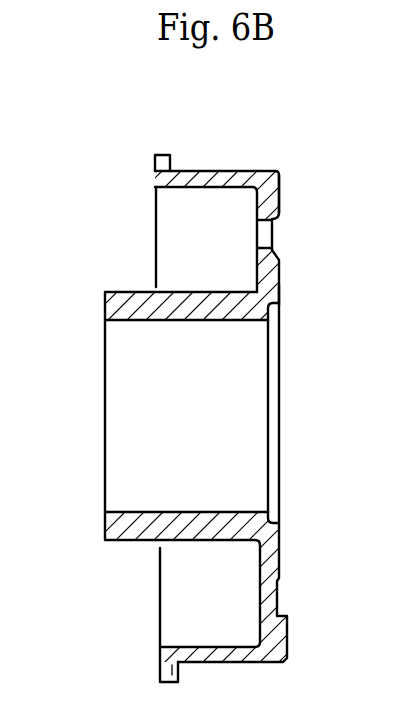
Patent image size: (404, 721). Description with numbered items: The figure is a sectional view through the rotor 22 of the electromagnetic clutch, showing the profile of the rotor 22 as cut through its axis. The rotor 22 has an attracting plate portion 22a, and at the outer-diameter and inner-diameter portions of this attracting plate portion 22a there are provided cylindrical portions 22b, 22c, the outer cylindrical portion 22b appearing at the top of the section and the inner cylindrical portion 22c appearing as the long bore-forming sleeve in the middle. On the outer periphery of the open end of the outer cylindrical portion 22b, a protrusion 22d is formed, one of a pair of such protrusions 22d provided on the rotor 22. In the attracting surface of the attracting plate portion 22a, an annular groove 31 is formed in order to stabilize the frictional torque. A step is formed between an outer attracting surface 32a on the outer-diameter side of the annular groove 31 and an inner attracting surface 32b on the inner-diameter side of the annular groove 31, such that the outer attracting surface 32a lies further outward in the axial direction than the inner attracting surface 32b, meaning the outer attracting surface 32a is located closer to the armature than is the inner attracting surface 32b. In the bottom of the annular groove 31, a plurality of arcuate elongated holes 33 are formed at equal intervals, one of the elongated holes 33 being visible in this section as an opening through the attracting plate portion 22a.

The rotor 22 is at (202, 350).
The attracting plate portion 22a is at (273, 272).
The outer cylindrical portion 22b is at (212, 178).
The inner cylindrical portion 22c is at (152, 313).
The protrusion 22d is at (155, 154).
The annular groove 31 is at (283, 223).
The outer attracting surface 32a is at (281, 183).
The inner attracting surface 32b is at (279, 295).
The arcuate elongated hole 33 is at (263, 238).